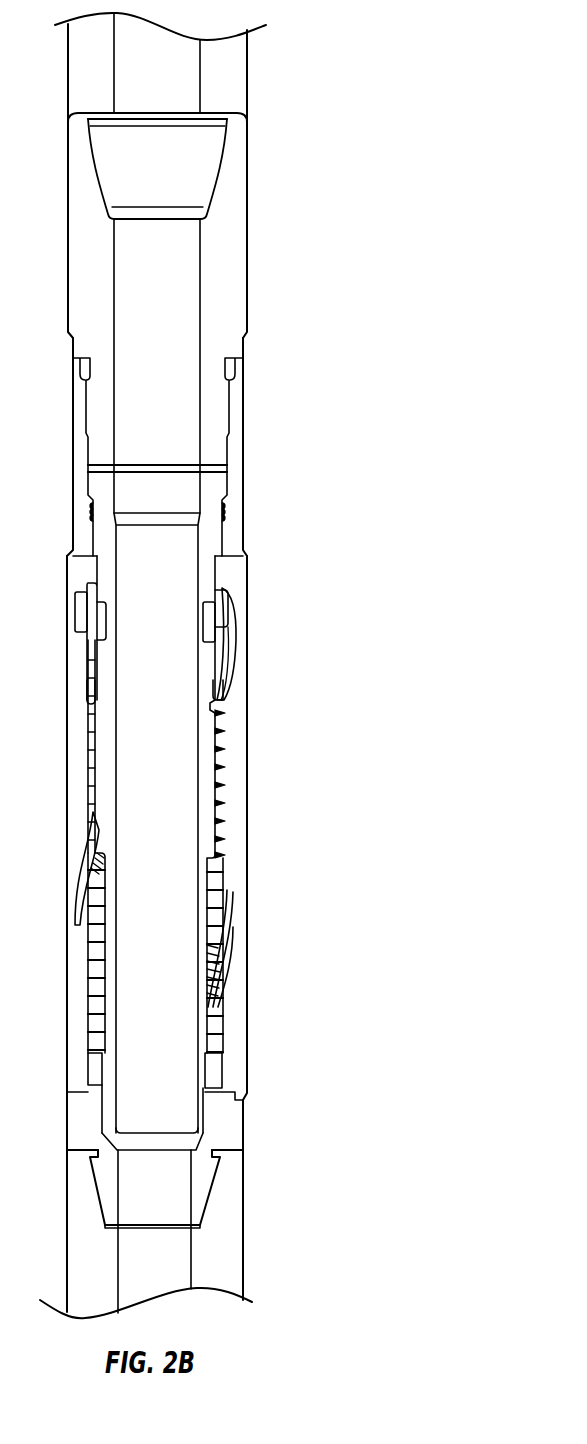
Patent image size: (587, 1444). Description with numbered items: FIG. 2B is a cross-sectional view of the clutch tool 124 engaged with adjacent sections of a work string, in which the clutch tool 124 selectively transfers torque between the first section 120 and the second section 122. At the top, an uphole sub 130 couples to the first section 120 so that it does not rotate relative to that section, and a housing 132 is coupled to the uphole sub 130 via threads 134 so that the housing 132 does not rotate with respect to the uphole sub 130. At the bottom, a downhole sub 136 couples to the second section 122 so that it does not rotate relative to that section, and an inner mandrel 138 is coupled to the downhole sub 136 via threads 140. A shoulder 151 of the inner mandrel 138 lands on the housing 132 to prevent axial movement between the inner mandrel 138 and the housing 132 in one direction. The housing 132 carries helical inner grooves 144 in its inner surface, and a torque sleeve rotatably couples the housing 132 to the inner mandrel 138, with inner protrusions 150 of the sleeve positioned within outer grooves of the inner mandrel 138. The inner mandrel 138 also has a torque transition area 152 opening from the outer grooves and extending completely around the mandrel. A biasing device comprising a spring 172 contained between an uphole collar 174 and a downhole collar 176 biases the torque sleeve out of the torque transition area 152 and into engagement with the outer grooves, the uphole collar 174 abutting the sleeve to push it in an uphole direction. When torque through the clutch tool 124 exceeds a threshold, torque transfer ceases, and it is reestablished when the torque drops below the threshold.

The first section 120 is at (248, 81).
The second section 122 is at (243, 1256).
The clutch tool 124 is at (352, 503).
The uphole sub 130 is at (235, 165).
The housing 132 is at (243, 537).
The threads 134 is at (234, 392).
The downhole sub 136 is at (228, 1140).
The inner mandrel 138 is at (210, 590).
The threads 140 is at (207, 1113).
The inner grooves 144 is at (233, 908).
The inner protrusions 150 is at (237, 612).
The shoulder 151 is at (226, 482).
The torque transition area 152 is at (203, 882).
The spring 172 is at (213, 995).
The uphole collar 174 is at (222, 683).
The downhole collar 176 is at (213, 1075).